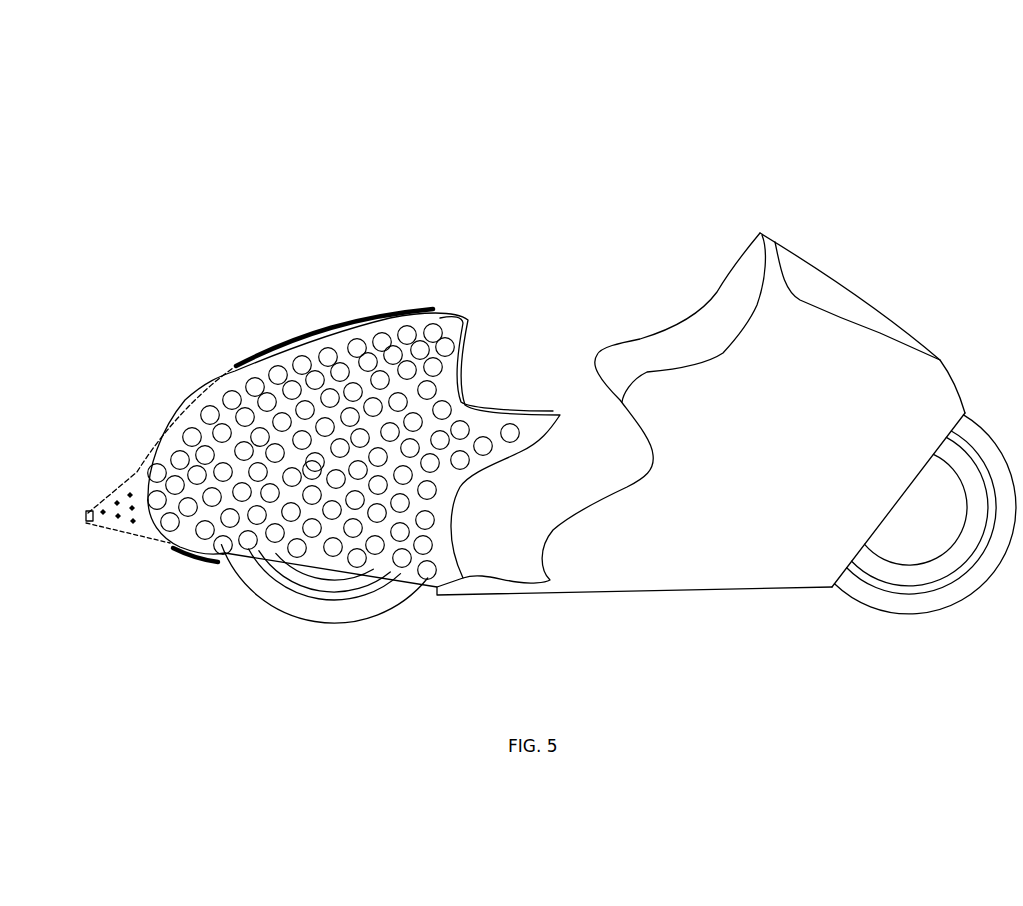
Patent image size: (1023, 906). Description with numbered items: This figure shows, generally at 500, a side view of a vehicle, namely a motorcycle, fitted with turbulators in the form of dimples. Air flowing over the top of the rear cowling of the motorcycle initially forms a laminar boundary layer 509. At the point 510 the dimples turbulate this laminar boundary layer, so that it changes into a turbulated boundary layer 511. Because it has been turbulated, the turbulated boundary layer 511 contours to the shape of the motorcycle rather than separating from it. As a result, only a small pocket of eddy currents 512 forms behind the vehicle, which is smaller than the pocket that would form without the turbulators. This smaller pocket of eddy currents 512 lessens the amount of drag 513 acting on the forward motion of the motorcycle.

The side view of a vehicle (motorcycle) 500 is at (952, 89).
The laminar boundary layer 509 is at (343, 318).
The point where the laminar boundary layer is turbulated 510 is at (233, 363).
The turbulated boundary layer 511 is at (184, 400).
The small pocket of eddy currents 512 is at (127, 524).
The drag 513 is at (78, 510).